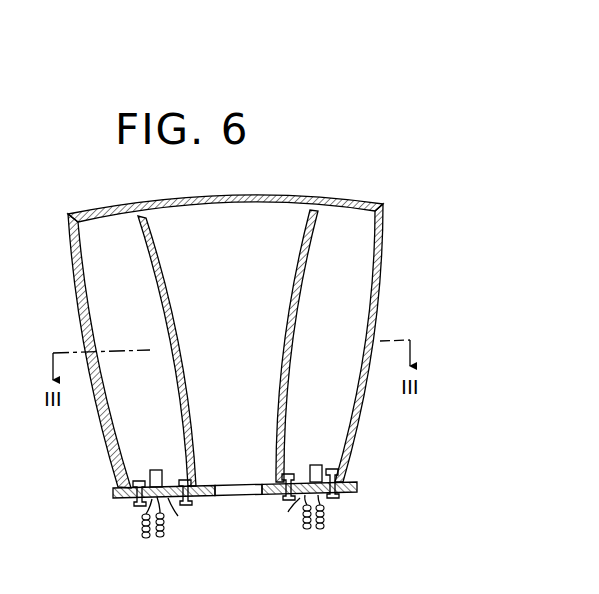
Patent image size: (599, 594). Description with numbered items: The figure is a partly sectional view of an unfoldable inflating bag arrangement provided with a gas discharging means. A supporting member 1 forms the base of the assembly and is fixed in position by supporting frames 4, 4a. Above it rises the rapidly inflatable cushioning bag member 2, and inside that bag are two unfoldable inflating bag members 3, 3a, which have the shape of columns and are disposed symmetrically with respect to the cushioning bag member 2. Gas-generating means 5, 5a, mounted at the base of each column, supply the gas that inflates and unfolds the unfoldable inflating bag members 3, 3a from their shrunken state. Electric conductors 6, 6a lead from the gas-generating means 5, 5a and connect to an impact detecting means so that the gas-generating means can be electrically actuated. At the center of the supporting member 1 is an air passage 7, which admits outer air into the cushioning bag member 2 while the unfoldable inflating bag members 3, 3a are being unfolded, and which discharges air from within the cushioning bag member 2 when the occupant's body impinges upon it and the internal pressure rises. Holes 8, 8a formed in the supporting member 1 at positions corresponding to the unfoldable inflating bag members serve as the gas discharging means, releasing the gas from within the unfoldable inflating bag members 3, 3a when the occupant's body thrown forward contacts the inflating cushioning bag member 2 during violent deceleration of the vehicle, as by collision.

The supporting member 1 is at (358, 488).
The rapidly inflatable cushioning bag member 2 is at (264, 194).
The unfoldable inflating bag member 3 is at (346, 302).
The unfoldable inflating bag member 3a is at (143, 308).
The supporting frame 4 is at (330, 468).
The supporting frame 4a is at (200, 462).
The gas-generating means 5 is at (311, 464).
The gas-generating means 5a is at (155, 469).
The electric conductor 6 is at (313, 530).
The electric conductor 6a is at (153, 538).
The air passage 7 is at (236, 496).
The gas discharging hole 8 is at (285, 515).
The gas discharging hole 8a is at (184, 518).